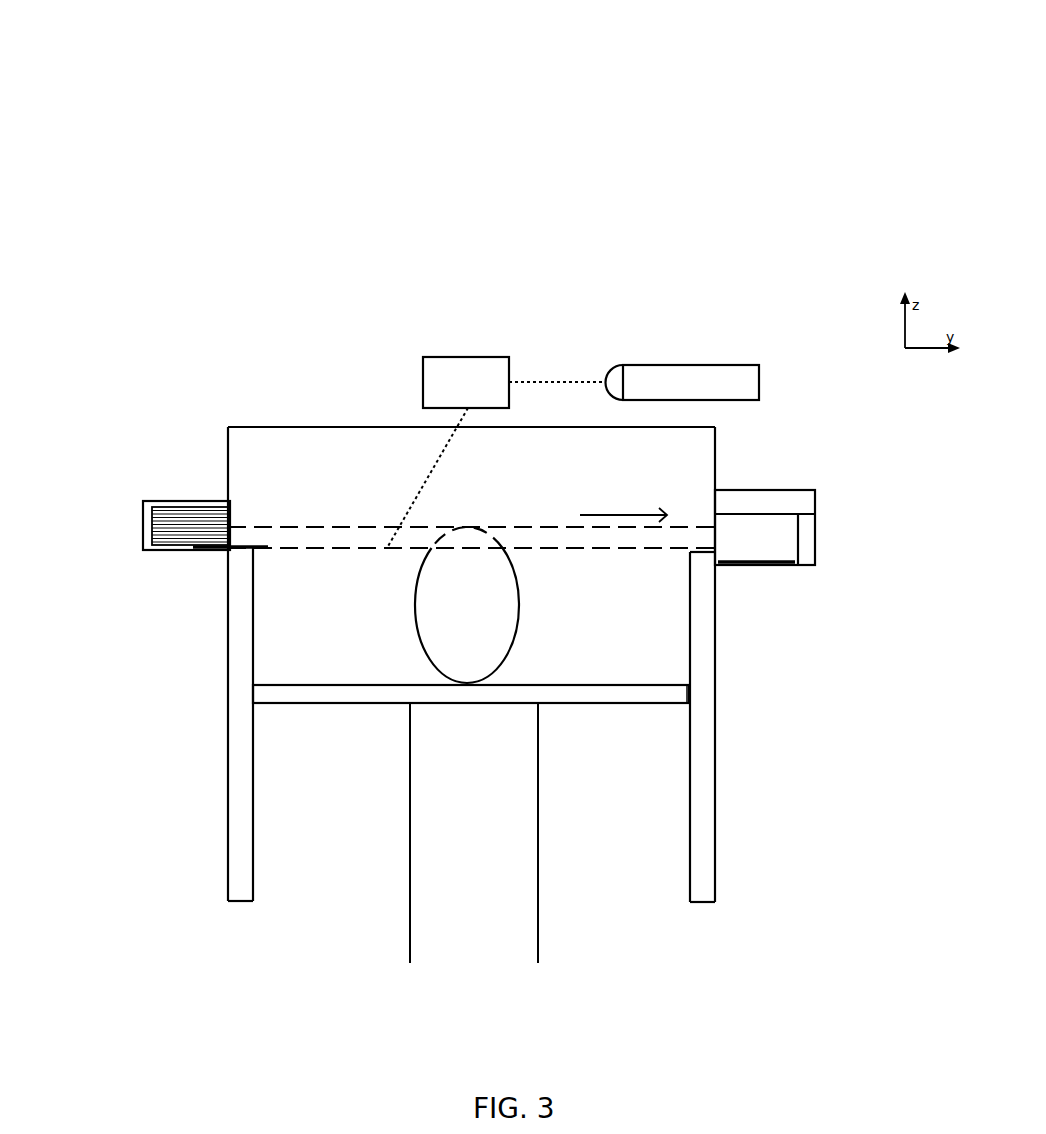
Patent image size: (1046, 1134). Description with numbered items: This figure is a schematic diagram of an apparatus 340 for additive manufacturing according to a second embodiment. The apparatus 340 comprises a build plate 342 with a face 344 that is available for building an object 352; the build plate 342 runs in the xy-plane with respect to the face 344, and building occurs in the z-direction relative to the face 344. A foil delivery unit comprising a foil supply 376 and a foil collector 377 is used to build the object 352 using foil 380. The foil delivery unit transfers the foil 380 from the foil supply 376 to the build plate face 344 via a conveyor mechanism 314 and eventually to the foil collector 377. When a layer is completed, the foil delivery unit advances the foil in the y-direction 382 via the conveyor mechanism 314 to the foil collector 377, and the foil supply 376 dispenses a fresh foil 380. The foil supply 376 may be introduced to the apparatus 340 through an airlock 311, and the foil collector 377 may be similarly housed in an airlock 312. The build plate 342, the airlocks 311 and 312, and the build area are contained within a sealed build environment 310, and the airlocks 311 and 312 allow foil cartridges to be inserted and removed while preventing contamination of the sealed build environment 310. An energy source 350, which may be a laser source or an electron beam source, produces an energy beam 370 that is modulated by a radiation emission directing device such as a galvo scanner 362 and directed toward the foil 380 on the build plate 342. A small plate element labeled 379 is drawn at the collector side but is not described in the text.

The apparatus 340 is at (214, 50).
The sealed build environment 310 is at (228, 545).
The airlock 311 is at (143, 522).
The airlock 312 is at (726, 490).
The conveyor mechanism 314 is at (527, 549).
The build plate 342 is at (663, 703).
The face 344 is at (646, 683).
The energy source 350 is at (645, 365).
The object 352 is at (415, 610).
The galvo scanner 362 is at (463, 357).
The energy beam 370 is at (427, 478).
The foil supply 376 is at (192, 509).
The foil collector 377 is at (758, 514).
The overflow plate 379 is at (784, 560).
The foil 380 is at (238, 546).
The y-direction 382 is at (641, 512).